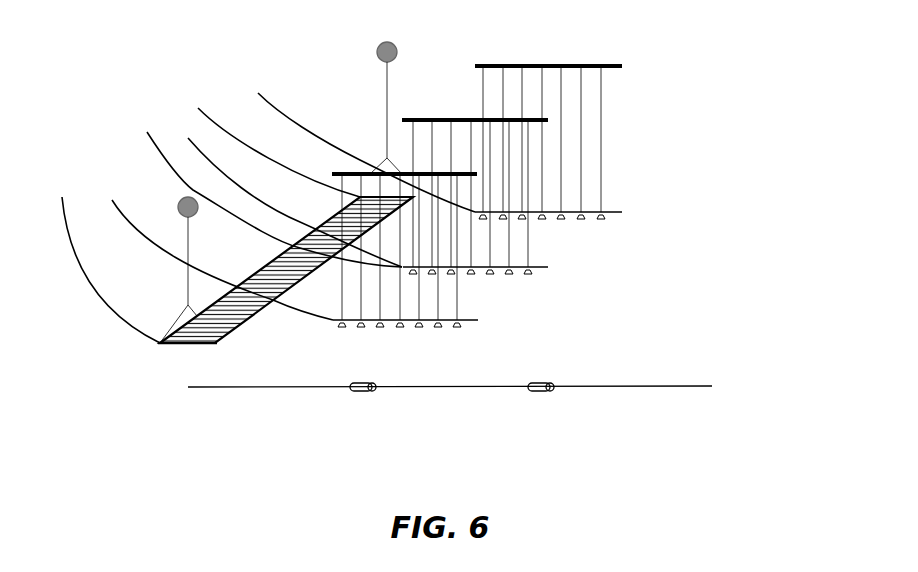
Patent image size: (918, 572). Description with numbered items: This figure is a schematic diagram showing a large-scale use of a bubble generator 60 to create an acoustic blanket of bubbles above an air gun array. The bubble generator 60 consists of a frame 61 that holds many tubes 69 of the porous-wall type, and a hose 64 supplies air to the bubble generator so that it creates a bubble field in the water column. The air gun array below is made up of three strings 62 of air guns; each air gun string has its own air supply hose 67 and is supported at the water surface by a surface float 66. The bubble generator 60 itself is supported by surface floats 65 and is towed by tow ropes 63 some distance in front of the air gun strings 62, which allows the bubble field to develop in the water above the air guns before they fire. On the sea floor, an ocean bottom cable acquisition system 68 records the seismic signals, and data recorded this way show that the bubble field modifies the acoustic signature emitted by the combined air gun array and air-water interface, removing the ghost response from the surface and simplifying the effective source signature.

The bubble generator 60 is at (180, 345).
The frame 61 is at (295, 285).
The strings of air guns 62 is at (548, 267).
The tow ropes 63 is at (198, 108).
The hose 64 is at (147, 132).
The surface floats 65 is at (387, 52).
The surface float 66 is at (498, 120).
The air supply hose 67 is at (258, 93).
The ocean bottom cable acquisition system 68 is at (549, 392).
The tubes 69 is at (275, 268).